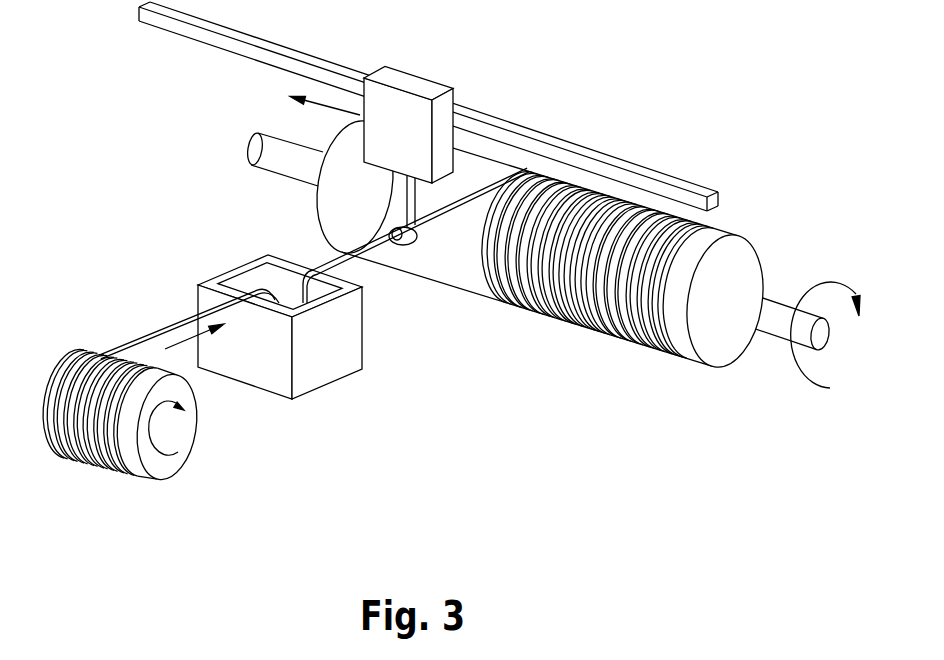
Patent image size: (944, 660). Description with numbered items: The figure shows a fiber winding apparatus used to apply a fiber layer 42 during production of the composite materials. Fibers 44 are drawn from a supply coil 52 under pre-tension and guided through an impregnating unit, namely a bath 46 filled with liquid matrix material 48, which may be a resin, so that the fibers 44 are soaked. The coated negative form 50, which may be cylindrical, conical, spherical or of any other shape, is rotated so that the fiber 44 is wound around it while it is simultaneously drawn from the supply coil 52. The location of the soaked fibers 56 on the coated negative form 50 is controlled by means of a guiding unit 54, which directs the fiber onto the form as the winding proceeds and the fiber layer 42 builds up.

The fiber layer 42 is at (730, 233).
The fibers 44 is at (165, 329).
The bath 46 is at (323, 372).
The matrix material 48 is at (247, 283).
The negative form 50 is at (722, 343).
The supply coil 52 is at (177, 440).
The guiding unit 54 is at (410, 83).
The soaked fibers 56 is at (328, 259).